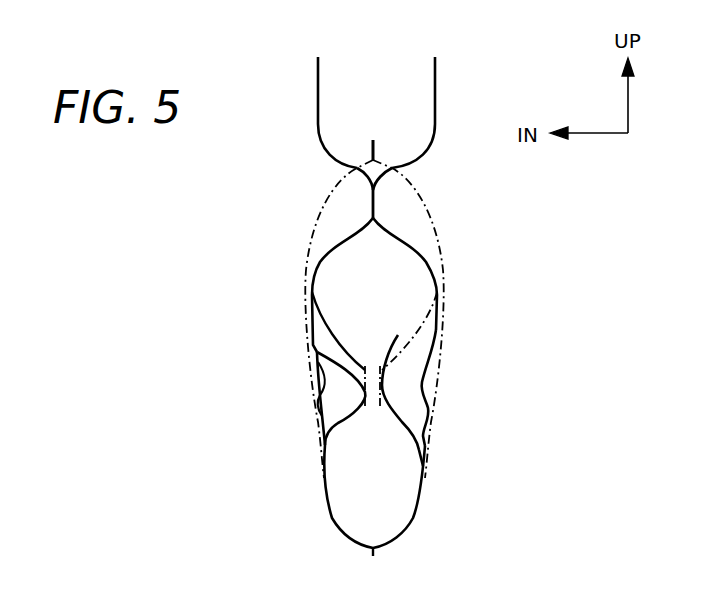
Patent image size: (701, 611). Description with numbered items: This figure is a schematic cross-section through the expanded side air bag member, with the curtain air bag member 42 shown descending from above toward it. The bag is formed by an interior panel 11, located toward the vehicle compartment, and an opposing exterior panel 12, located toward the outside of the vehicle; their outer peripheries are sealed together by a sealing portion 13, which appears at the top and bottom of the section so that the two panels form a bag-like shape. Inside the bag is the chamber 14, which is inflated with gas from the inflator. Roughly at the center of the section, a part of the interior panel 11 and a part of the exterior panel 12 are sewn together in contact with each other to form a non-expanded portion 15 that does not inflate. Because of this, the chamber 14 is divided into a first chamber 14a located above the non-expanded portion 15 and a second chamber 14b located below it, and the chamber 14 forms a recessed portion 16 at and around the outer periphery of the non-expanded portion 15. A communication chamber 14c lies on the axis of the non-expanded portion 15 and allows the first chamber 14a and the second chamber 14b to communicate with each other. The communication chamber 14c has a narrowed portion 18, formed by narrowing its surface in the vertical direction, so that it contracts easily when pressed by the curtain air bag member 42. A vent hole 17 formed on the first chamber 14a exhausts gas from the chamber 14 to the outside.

The curtain air bag member 42 is at (333, 101).
The interior panel 11 is at (333, 243).
The exterior panel 12 is at (426, 253).
The sealing portion 13 is at (380, 201).
The chamber 14 is at (443, 439).
The first chamber 14a is at (418, 345).
The second chamber 14b is at (426, 485).
The communication chamber 14c is at (426, 407).
The non-expanded portion 15 is at (370, 398).
The recessed portion 16 is at (343, 380).
The vent hole 17 is at (396, 371).
The narrowed portion 18 is at (320, 397).